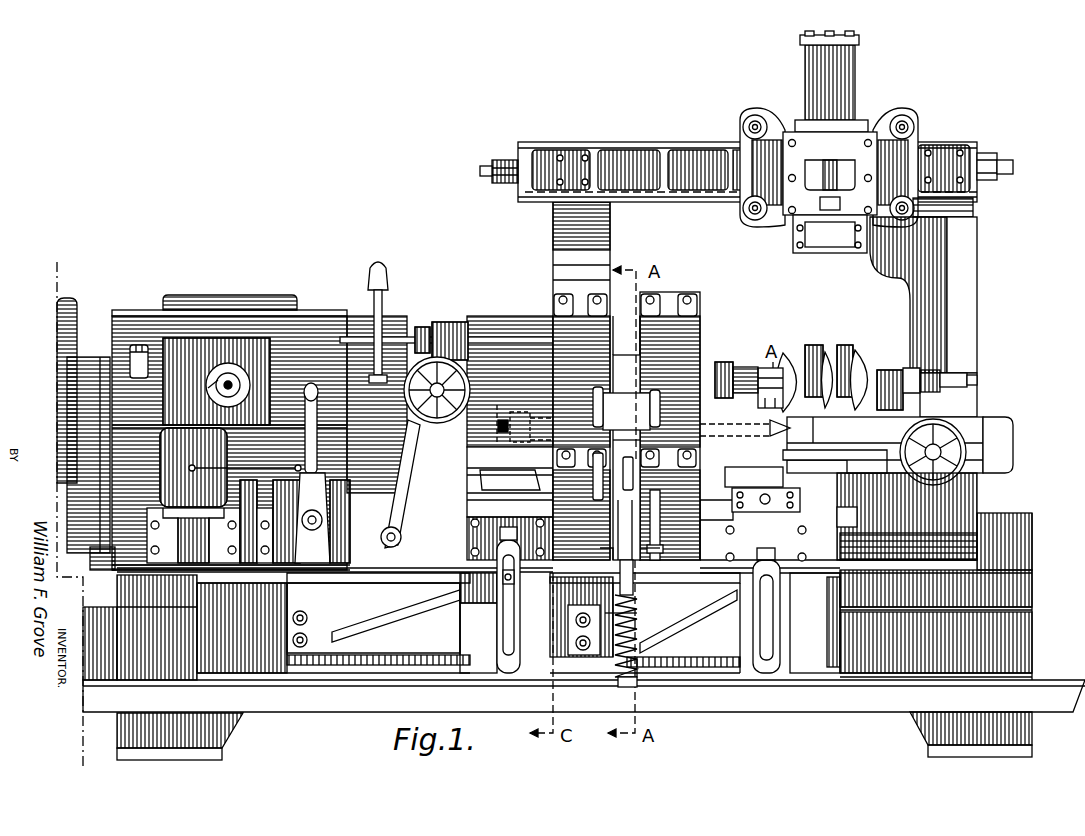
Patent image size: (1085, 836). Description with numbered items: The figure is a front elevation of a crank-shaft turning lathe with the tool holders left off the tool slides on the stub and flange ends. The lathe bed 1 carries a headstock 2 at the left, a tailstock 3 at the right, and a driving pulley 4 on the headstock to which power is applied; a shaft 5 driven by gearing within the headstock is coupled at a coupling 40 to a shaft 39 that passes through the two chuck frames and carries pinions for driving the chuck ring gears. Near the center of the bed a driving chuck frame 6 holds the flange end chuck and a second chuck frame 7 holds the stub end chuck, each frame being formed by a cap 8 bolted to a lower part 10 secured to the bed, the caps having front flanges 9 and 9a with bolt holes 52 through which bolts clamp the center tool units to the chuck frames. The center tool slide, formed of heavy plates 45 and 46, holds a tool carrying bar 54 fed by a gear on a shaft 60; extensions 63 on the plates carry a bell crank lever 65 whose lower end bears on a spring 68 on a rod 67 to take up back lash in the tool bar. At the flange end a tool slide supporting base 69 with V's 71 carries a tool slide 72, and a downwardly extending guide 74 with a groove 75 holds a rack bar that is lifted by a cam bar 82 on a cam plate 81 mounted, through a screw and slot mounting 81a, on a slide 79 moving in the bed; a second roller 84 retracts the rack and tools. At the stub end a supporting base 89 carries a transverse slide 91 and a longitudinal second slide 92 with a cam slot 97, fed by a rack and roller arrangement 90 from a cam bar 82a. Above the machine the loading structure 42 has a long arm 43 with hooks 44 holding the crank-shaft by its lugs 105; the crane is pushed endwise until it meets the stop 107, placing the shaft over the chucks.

The bed 1 is at (1010, 638).
The headstock 2 is at (305, 328).
The tailstock 3 is at (973, 432).
The driving pulley 4 is at (72, 330).
The shaft 5 is at (420, 337).
The driving chuck frame 6 is at (567, 337).
The chuck frame 7 is at (703, 322).
The caps 8 is at (595, 375).
The flange 9 is at (650, 413).
The flange 9a is at (650, 493).
The lower parts of chuck frames 10 is at (553, 523).
The shaft 39 is at (484, 350).
The coupling 40 is at (452, 345).
The loading structure 42 is at (725, 123).
The arm 43 is at (872, 343).
The hooks 44 is at (848, 390).
The plate 45 is at (600, 553).
The plate 46 is at (660, 553).
The bolt holes 52 is at (593, 420).
The tool carrying bar 54 is at (623, 440).
The shaft 60 is at (533, 463).
The extensions 63 is at (637, 562).
The bell crank lever 65 is at (627, 510).
The rod 67 is at (590, 620).
The spring 68 is at (637, 647).
The tool slide supporting base 69 is at (473, 505).
The V's 71 is at (473, 477).
The tool slide 72 is at (507, 417).
The guide 74 is at (487, 628).
The groove 75 is at (550, 607).
The slide 79 is at (245, 655).
The cam plate 81 is at (392, 642).
The screw and slot mounting 81a is at (308, 650).
The cam bar 82 is at (370, 623).
The cam bar 82a is at (688, 620).
The second roller 84 is at (506, 603).
The tool slide supporting base 89 is at (825, 553).
The rack and roller arrangement 90 is at (777, 683).
The slide 91 is at (820, 500).
The second slide 92 is at (827, 472).
The cam slot 97 is at (763, 478).
The lugs 105 is at (757, 393).
The stop 107 is at (490, 158).